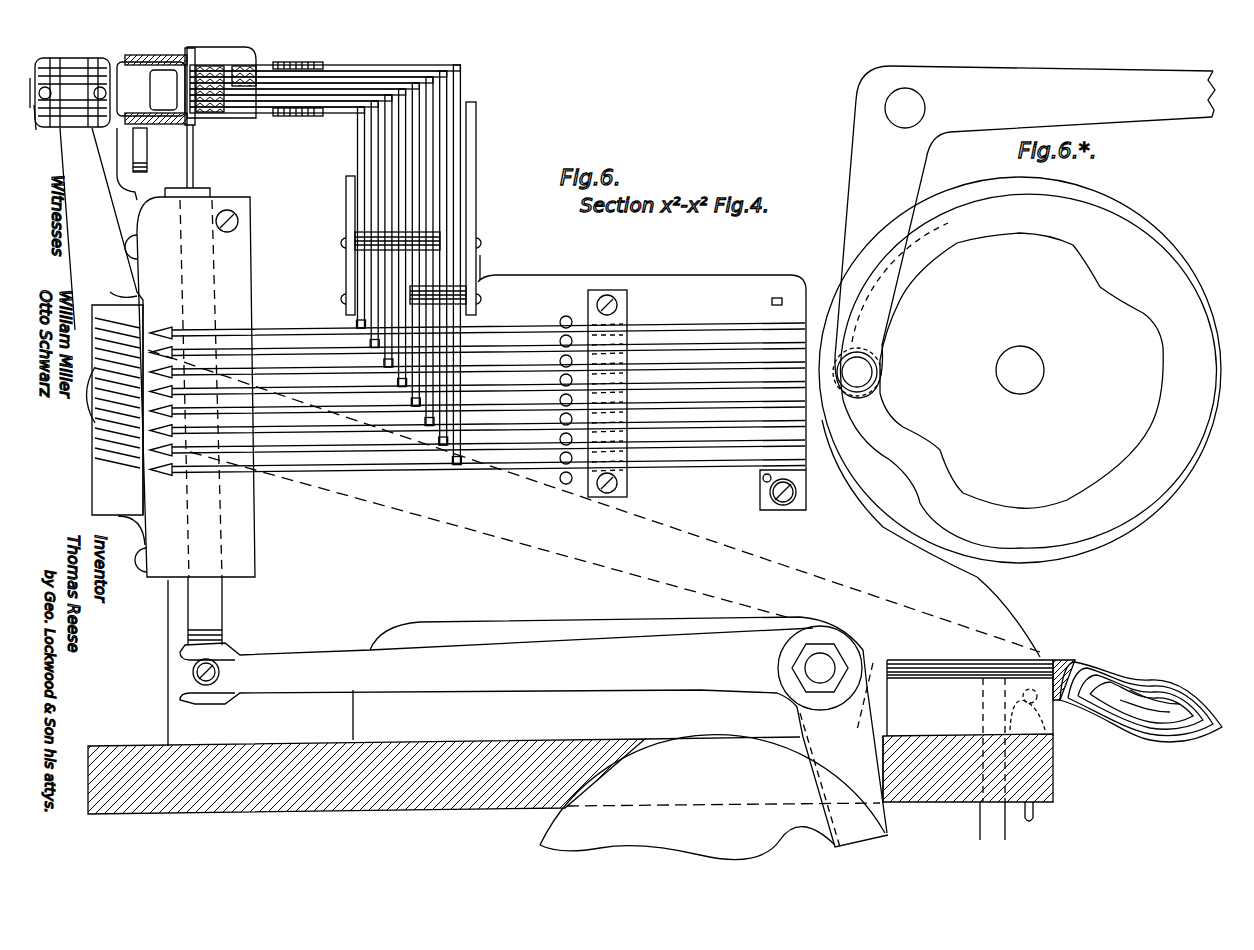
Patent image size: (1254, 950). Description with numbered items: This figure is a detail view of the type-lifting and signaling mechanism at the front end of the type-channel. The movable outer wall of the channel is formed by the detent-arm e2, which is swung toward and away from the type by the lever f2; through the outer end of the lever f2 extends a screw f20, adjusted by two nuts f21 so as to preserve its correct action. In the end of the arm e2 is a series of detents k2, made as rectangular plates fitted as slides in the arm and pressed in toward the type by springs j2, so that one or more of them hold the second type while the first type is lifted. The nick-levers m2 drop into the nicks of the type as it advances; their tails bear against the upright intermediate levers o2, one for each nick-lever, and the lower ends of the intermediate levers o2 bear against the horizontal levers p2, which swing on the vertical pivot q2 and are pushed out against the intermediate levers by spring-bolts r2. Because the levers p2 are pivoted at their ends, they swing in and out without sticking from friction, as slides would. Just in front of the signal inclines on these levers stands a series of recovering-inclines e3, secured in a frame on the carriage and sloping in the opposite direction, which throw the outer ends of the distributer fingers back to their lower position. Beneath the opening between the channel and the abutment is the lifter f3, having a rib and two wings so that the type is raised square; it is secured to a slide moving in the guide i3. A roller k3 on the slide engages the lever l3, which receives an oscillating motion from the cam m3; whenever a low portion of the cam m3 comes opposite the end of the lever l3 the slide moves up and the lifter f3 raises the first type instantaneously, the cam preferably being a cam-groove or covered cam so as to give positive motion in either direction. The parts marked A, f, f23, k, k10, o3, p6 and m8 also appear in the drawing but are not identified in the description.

In FIG. 6, the base A is at (505, 725).
In FIG. 6, the cam m3 is at (712, 797).
In FIG. 6, the roller k3 is at (205, 611).
In FIG. 6, the guide i3 is at (506, 517).
In FIG. 6, the detents k2 is at (194, 672).
In FIG. 6, the block p6 is at (970, 731).
In FIG. 6, the intermediate levers o2 is at (1088, 690).
In FIG. 6, the lifter f3 is at (194, 172).
In FIG. 6, the lever f is at (101, 321).
In FIG. 6, the slide f23 is at (120, 164).
In FIG. 6, the recovering-inclines e3 is at (116, 425).
In FIG. 6, the lever f2 is at (70, 92).
In FIG. 6, the nuts f21 is at (50, 60).
In FIG. 6, the screw f20 is at (36, 128).
In FIG. 6, the block k is at (151, 89).
In FIG. 6, the slot k10 is at (163, 90).
In FIG. 6, the springs j2 is at (156, 80).
In FIG. 6, the detent-arm e2 is at (241, 77).
In FIG. 6, the nick-levers m2 is at (325, 89).
In FIG. 6, the vertical pivot q2 is at (779, 395).
In FIG. 6, the horizontal levers p2 is at (488, 389).
In FIG. 6, the arrow heads o3 is at (160, 395).
In FIG. 6, the spring-bolts r2 is at (562, 400).
The lever l3 is at (1025, 232).
The cam wheel m8 is at (1020, 417).